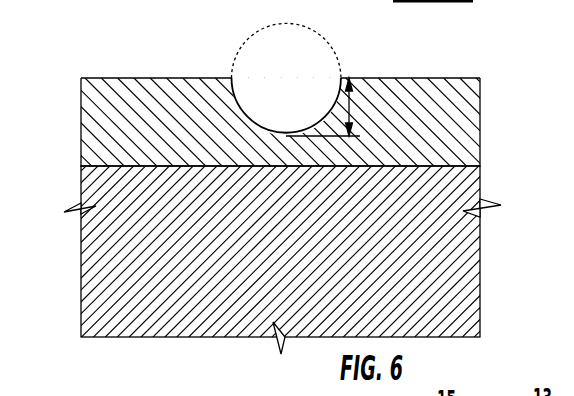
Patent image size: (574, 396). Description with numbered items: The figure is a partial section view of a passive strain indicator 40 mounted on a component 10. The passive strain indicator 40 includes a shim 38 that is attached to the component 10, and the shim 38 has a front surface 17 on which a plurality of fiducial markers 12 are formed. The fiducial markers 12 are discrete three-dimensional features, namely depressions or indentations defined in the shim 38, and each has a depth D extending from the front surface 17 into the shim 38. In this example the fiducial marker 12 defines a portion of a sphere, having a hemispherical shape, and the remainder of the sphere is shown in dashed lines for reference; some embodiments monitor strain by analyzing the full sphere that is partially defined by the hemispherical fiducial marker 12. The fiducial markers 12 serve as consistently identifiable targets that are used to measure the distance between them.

The component 10 is at (82, 352).
The fiducial marker 12 is at (276, 96).
The front surface 17 is at (128, 68).
The shim 38 is at (80, 132).
The passive strain indicator 40 is at (287, 195).
The depth D is at (351, 102).